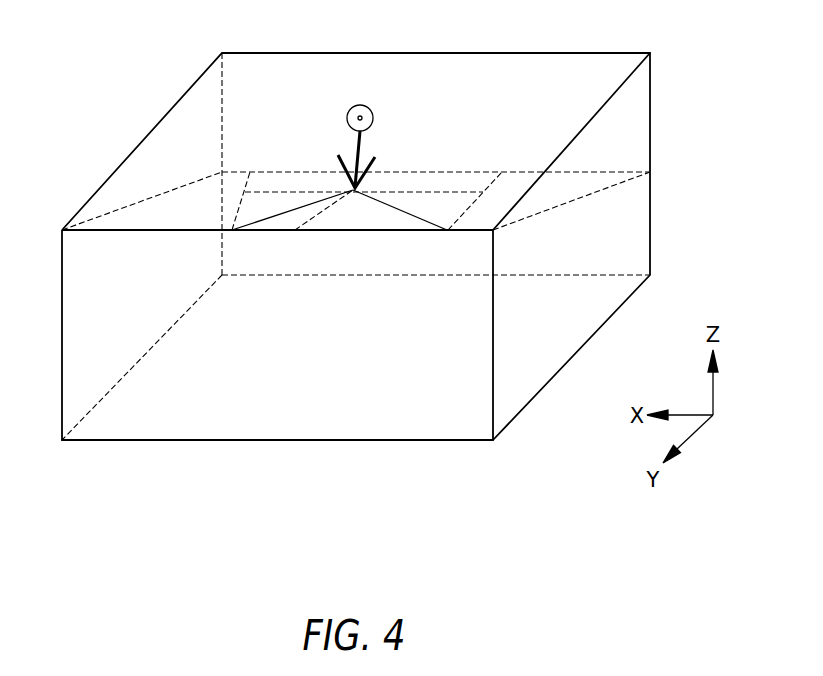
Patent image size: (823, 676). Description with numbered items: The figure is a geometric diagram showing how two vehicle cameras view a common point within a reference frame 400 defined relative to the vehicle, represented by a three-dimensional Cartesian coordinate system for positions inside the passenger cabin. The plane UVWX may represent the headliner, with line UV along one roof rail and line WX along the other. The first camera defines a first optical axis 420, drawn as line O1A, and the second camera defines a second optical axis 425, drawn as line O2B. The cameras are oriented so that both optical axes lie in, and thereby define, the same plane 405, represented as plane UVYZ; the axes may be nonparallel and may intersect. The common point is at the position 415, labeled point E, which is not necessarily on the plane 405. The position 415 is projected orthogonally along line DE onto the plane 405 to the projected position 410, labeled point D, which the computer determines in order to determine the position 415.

The reference frame 400 is at (123, 440).
The plane 405 is at (562, 205).
The projected position 410 is at (357, 190).
The position 415 is at (362, 106).
The first optical axis 420 is at (231, 227).
The second optical axis 425 is at (452, 218).